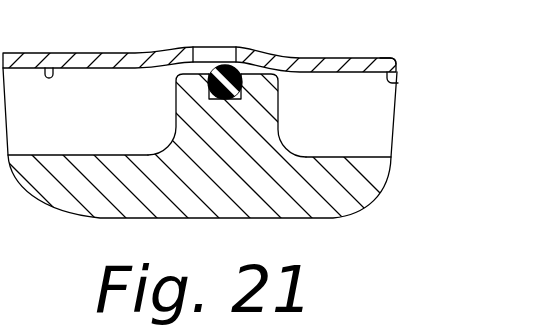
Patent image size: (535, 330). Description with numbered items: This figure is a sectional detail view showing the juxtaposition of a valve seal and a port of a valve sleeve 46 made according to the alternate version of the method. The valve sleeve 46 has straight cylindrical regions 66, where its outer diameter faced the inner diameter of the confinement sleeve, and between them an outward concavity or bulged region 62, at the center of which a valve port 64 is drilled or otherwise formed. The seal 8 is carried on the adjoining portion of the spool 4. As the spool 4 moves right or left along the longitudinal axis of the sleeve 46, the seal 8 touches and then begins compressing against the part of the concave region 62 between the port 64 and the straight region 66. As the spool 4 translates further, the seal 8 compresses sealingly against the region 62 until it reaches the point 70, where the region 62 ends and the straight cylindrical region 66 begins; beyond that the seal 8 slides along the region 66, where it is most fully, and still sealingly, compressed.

The spool 4 is at (206, 140).
The seal 8 is at (219, 95).
The valve sleeve 46 is at (382, 57).
The bulged region 62 is at (175, 50).
The valve port 64 is at (237, 49).
The straight cylindrical region 66 is at (49, 67).
The point 70 is at (146, 67).